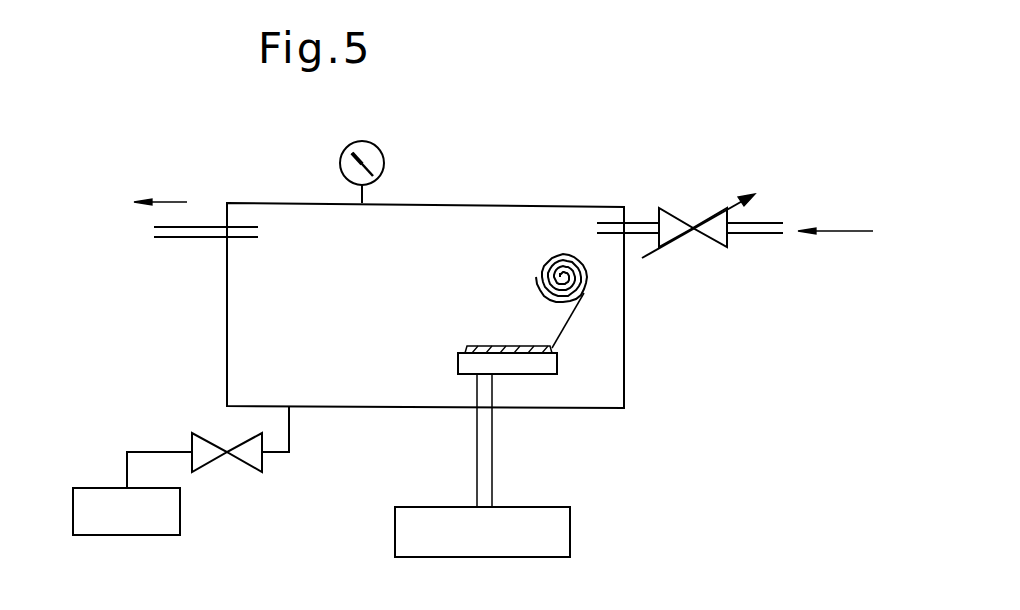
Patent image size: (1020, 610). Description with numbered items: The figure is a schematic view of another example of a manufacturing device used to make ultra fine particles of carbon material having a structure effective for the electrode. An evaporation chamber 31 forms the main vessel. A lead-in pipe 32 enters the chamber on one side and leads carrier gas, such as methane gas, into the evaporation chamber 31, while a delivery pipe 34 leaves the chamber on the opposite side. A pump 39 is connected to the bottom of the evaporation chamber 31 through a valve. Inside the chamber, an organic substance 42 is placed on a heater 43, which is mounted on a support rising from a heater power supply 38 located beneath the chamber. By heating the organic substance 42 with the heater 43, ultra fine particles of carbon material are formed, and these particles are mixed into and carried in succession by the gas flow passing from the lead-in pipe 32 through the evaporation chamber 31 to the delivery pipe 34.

The evaporation chamber 31 is at (355, 408).
The lead-in pipe 32 is at (752, 238).
The delivery pipe 34 is at (178, 237).
The heater power supply 38 is at (565, 520).
The pump 39 is at (153, 530).
The organic substance 42 is at (566, 279).
The heater 43 is at (552, 363).